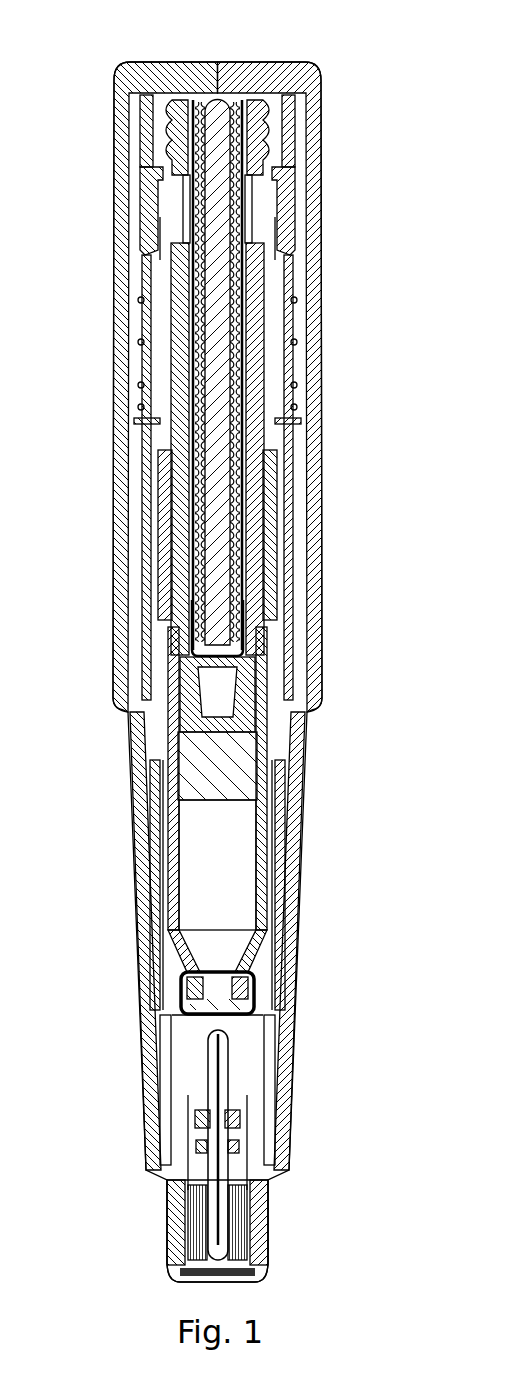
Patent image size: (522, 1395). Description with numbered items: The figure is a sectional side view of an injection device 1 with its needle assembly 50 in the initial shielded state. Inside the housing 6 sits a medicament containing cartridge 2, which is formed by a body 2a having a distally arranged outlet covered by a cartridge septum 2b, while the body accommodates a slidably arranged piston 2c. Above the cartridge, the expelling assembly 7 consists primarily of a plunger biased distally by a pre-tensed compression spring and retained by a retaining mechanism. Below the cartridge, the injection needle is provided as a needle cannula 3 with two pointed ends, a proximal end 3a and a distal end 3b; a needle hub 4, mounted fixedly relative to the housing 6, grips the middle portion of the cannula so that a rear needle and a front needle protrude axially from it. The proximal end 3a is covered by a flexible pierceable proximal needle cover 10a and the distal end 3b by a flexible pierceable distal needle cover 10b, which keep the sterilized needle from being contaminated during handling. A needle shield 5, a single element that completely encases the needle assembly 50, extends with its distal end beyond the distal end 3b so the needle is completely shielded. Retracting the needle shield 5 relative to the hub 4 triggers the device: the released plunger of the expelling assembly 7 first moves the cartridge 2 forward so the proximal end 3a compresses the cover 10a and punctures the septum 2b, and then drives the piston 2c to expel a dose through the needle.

The injection device 1 is at (350, 55).
The housing 6 is at (310, 435).
The expelling assembly 7 is at (242, 546).
The medicament containing cartridge 2 is at (200, 898).
The cartridge body 2a is at (262, 860).
The cartridge septum 2b is at (222, 1003).
The piston 2c is at (232, 757).
The needle cannula 3 is at (222, 1080).
The proximal end of the needle cannula 3a is at (222, 1045).
The distal end of the needle cannula 3b is at (217, 1237).
The needle hub 4 is at (176, 1100).
The needle shield 5 is at (258, 1255).
The proximal needle cover 10a is at (210, 1037).
The distal needle cover 10b is at (208, 1250).
The needle assembly 50 is at (182, 1164).